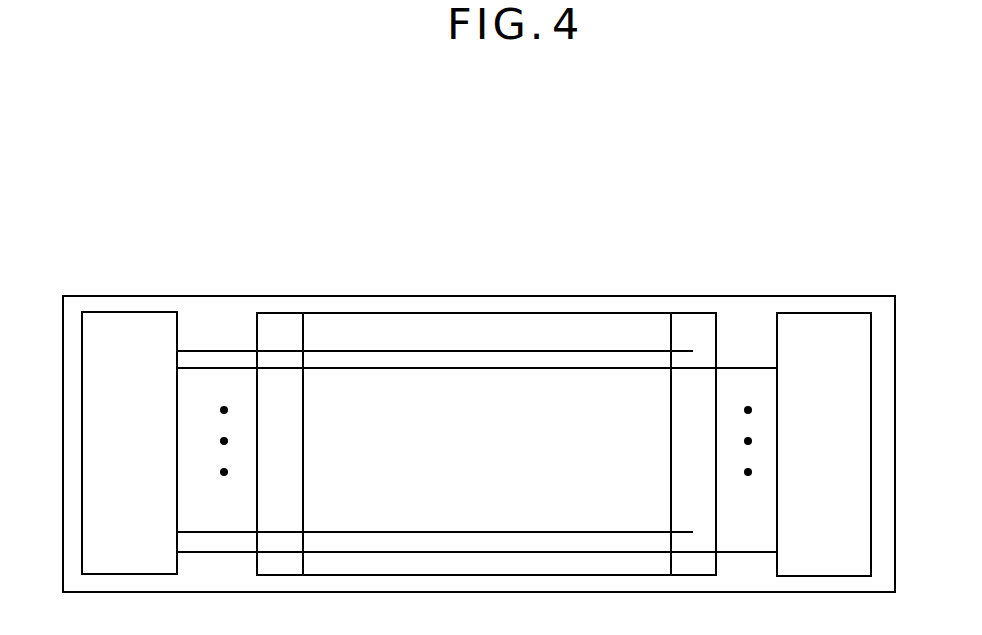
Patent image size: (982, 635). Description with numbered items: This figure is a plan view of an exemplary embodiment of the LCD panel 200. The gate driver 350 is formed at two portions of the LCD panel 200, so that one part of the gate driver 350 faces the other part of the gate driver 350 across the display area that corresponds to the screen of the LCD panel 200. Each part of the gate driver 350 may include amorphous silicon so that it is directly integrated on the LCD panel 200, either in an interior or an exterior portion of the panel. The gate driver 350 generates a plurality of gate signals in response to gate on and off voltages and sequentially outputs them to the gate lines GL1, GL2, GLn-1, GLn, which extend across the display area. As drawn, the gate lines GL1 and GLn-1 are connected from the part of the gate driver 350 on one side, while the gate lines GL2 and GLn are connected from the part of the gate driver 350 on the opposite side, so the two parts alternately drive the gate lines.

The LCD panel 200 is at (400, 296).
The gate driver 350 is at (128, 312).
The gate line GL1 is at (419, 345).
The gate line GL2 is at (493, 363).
The gate line GLn-1 is at (409, 526).
The gate line GLn is at (492, 546).